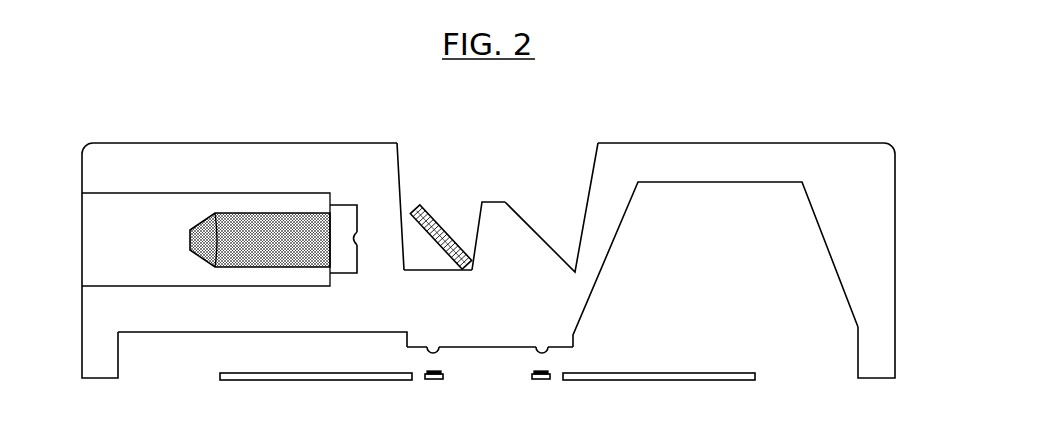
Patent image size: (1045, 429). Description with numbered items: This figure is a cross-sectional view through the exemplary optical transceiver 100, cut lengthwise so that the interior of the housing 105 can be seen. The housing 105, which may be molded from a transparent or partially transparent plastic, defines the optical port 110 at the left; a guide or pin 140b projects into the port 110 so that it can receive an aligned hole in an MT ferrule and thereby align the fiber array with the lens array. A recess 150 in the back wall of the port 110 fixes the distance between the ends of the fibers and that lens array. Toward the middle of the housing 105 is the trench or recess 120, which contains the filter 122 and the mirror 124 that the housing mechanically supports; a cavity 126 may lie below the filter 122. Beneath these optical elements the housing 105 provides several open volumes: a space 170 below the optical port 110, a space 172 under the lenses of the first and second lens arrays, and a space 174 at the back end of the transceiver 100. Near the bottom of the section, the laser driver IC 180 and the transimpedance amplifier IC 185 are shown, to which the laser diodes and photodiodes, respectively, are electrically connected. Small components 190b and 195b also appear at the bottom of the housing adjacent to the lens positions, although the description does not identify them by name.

The transceiver 100 is at (613, 95).
The housing 105 is at (762, 150).
The optical port 110 is at (136, 256).
The trench or recess 120 is at (428, 157).
The filter 122 is at (433, 217).
The mirror 124 is at (527, 222).
The cavity 126 is at (423, 255).
The guide or pin 140b is at (237, 210).
The recess 150 is at (345, 267).
The space 170 is at (187, 362).
The space 172 is at (495, 362).
The space 174 is at (741, 256).
The driver IC 180 is at (265, 381).
The amplifier IC 185 is at (732, 370).
The left contact pad 190b is at (430, 382).
The right contact pad 195b is at (547, 381).